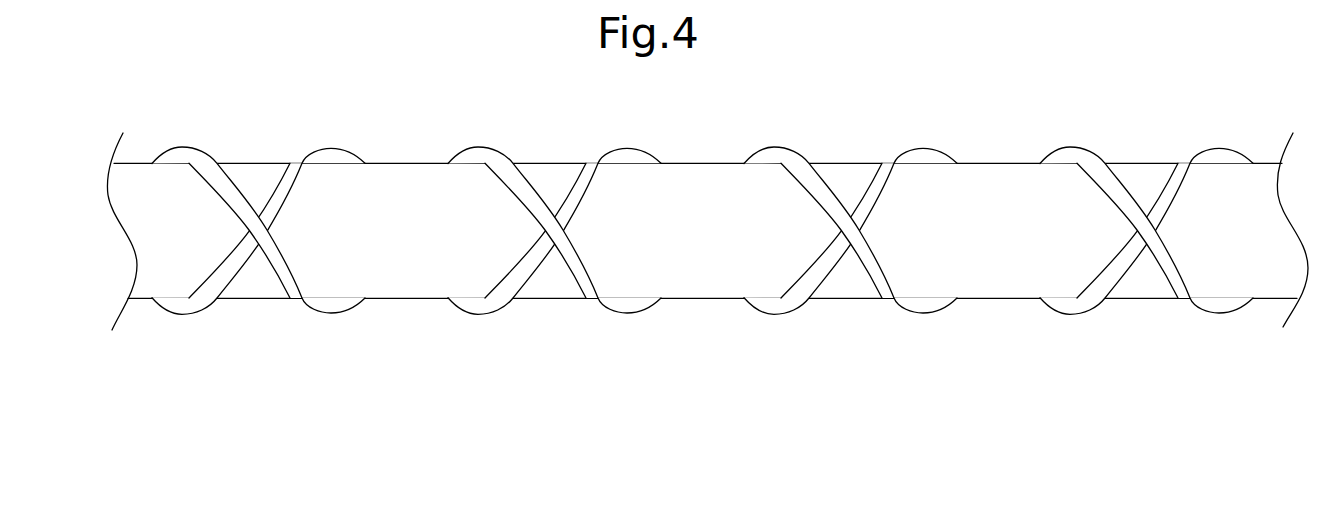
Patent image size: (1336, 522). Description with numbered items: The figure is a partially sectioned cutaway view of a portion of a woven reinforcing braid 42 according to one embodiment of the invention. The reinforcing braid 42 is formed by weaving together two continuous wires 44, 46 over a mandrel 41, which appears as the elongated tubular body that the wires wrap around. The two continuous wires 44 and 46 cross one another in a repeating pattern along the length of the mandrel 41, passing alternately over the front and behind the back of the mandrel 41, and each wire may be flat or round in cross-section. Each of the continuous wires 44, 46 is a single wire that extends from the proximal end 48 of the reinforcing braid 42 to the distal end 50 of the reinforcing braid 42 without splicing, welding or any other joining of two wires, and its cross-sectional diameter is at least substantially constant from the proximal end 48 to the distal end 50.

The mandrel 41 is at (995, 283).
The reinforcing braid 42 is at (702, 223).
The continuous wire 44 is at (205, 298).
The continuous wire 46 is at (328, 303).
The proximal end 48 is at (135, 347).
The distal end 50 is at (1268, 348).